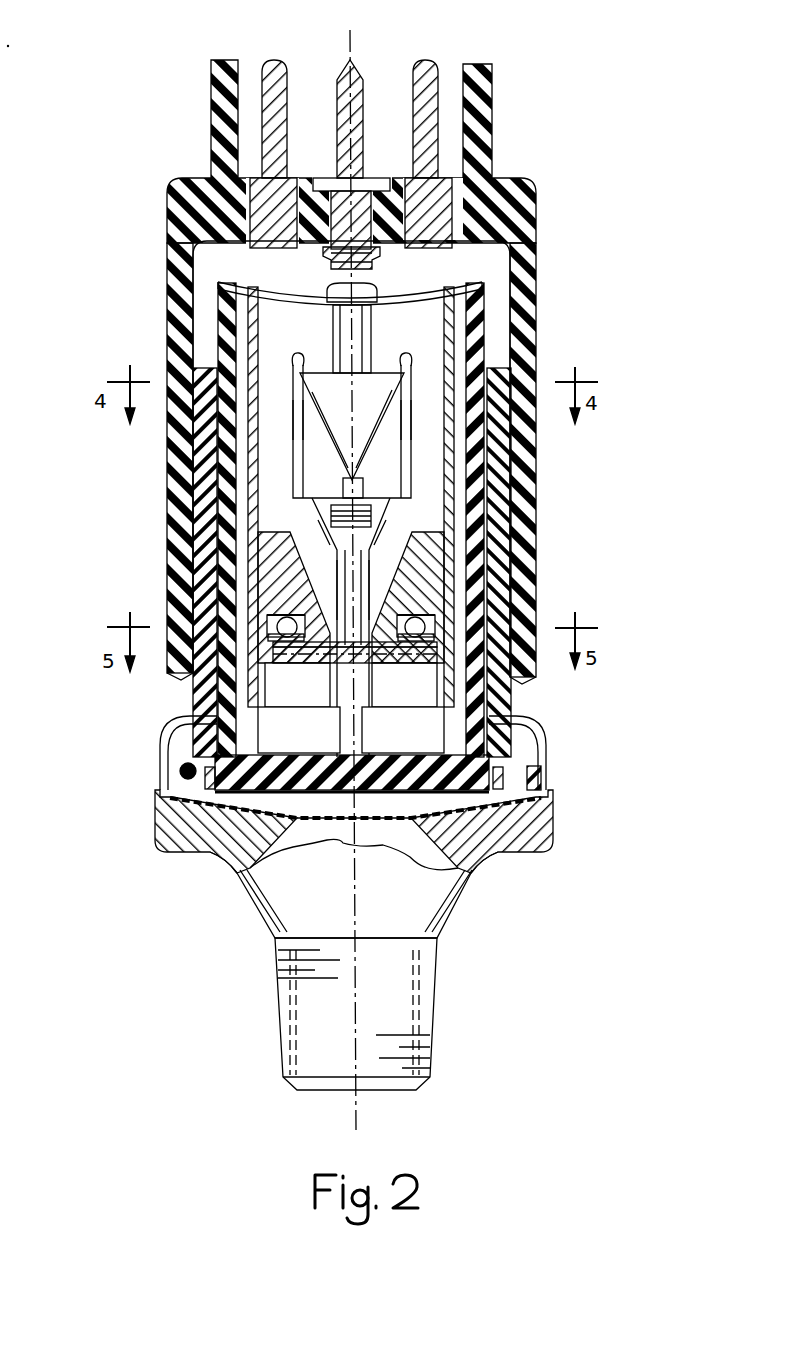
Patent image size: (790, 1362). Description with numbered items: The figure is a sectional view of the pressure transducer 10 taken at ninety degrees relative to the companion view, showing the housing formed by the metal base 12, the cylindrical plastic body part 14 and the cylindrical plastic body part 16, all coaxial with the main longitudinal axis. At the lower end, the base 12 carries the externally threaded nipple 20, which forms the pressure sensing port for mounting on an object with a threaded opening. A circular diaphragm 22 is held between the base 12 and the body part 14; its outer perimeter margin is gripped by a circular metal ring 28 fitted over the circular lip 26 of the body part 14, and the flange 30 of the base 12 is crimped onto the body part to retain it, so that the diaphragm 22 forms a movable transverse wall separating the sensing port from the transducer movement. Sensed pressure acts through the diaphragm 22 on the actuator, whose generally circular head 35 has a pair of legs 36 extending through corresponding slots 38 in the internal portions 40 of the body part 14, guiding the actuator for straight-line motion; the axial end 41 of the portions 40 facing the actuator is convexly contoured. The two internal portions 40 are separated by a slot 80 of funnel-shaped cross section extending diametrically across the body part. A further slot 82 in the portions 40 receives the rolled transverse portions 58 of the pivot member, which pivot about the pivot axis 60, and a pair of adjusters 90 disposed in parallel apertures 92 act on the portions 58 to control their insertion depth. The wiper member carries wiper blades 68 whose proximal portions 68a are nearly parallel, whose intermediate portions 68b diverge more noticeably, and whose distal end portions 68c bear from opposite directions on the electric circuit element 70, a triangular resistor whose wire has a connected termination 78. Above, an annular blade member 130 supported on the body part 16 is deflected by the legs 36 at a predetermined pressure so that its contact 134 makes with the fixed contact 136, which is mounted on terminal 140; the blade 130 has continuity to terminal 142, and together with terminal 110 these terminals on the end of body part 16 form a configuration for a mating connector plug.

The pressure transducer 10 is at (538, 179).
The metal base 12 is at (560, 851).
The cylindrical plastic body part 14 is at (500, 396).
The cylindrical plastic body part 16 is at (530, 306).
The externally threaded nipple 20 is at (440, 1008).
The diaphragm 22 is at (236, 833).
The circular lip 26 is at (182, 766).
The circular metal ring 28 is at (542, 781).
The flange 30 is at (538, 723).
The head 35 is at (270, 802).
The legs 36 is at (220, 455).
The slots 38 is at (218, 567).
The internal portions 40 is at (268, 546).
The axial end 41 is at (318, 707).
The transverse portions 58 is at (288, 664).
The pivot axis 60 is at (273, 655).
The wiper blades 68 is at (295, 358).
The proximal portions of blades 68a is at (345, 589).
The intermediate portions of blades 68b is at (318, 524).
The distal end portions of blades 68c is at (297, 403).
The electric circuit element 70 is at (358, 392).
The termination 78 is at (377, 490).
The slot 80 is at (373, 511).
The slot 82 is at (352, 697).
The adjusters 90 is at (268, 618).
The apertures 92 is at (284, 615).
The terminal 110 is at (361, 58).
The annular blade member 130 is at (513, 259).
The contact 134 is at (370, 285).
The fixed contact 136 is at (331, 277).
The terminal 140 is at (440, 63).
The terminal 142 is at (283, 62).